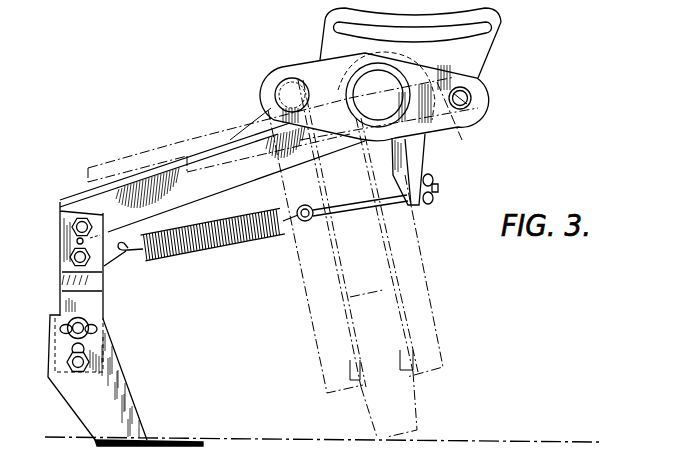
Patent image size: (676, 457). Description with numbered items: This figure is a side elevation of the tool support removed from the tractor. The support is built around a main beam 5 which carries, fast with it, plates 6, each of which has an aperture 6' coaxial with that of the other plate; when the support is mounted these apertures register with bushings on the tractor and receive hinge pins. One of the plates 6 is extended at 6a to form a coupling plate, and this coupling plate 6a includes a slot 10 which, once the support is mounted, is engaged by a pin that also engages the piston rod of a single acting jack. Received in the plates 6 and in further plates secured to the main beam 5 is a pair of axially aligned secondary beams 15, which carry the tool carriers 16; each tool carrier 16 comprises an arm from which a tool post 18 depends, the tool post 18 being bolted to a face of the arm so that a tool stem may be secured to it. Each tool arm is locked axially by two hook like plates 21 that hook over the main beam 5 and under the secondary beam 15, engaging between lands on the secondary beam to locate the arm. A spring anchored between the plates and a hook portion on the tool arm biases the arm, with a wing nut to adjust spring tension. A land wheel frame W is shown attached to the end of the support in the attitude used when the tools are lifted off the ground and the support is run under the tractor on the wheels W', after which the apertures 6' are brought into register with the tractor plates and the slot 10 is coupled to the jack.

The main beam 5 is at (361, 72).
The plates 6 is at (391, 96).
The coupling plate 6a is at (487, 48).
The aperture 6' is at (463, 119).
The slot 10 is at (485, 30).
The secondary beams 15 is at (281, 90).
The tool carriers 16 is at (145, 172).
The tool post 18 is at (104, 255).
The hook like plates 21 is at (412, 148).
The land wheel frames W is at (283, 235).
The wheels W' is at (404, 404).